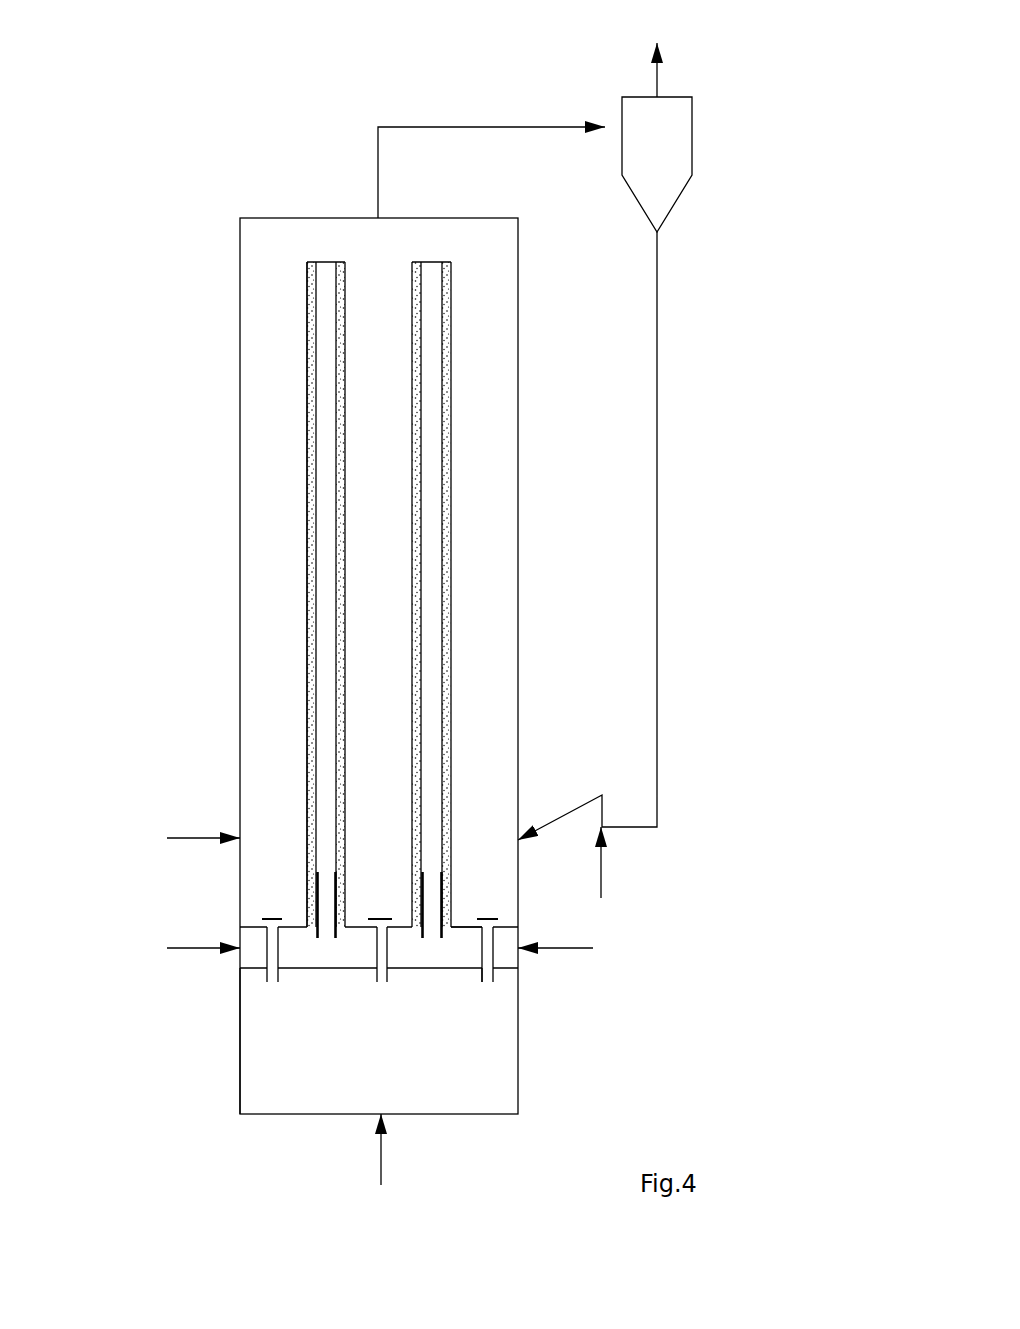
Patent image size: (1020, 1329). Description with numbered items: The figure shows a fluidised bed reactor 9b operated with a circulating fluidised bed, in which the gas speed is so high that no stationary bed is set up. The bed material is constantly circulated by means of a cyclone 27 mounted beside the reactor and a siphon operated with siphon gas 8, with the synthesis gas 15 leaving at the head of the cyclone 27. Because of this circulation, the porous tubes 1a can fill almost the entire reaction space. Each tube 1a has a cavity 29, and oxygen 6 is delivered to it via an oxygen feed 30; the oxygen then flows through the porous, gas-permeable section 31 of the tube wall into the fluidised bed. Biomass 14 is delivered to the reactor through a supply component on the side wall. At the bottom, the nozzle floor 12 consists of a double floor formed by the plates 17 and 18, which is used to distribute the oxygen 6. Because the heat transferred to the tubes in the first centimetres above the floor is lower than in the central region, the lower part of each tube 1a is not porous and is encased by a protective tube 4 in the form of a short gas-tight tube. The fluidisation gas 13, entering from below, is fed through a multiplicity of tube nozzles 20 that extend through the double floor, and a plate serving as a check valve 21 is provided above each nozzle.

The porous tubes 1a is at (310, 715).
The protective tube 4 is at (318, 885).
The oxygen 6 is at (380, 936).
The siphon gas 8 is at (587, 565).
The fluidised bed reactor 9b is at (187, 525).
The nozzle floor 12 is at (417, 990).
The fluidisation gas 13 is at (396, 1149).
The biomass 14 is at (203, 824).
The synthesis gas 15 is at (657, 55).
The plate 17 is at (468, 970).
The plate 18 is at (460, 930).
The tube nozzles 20 is at (373, 979).
The check valve 21 is at (383, 917).
The cyclone 27 is at (672, 138).
The cavity 29 is at (431, 355).
The oxygen feed 30 is at (290, 991).
The porous, gas-permeable section 31 is at (309, 407).